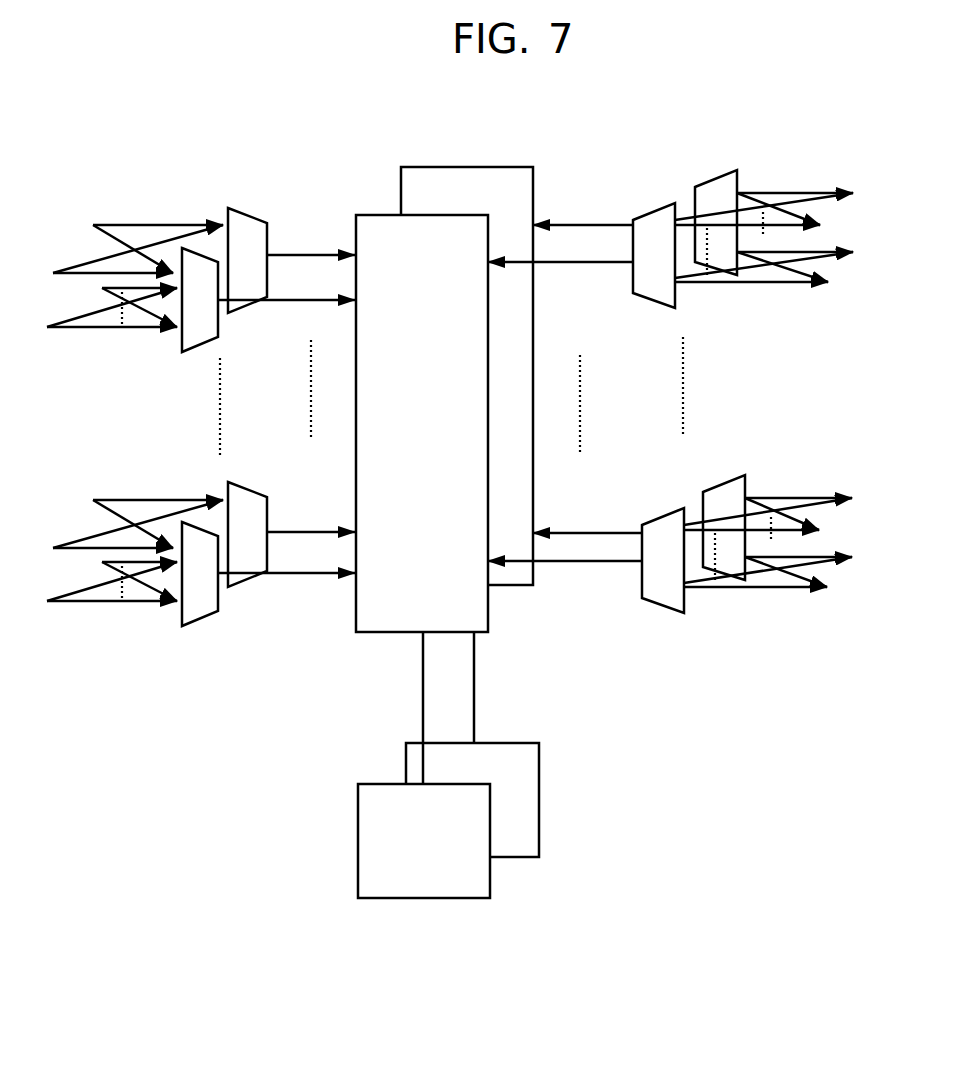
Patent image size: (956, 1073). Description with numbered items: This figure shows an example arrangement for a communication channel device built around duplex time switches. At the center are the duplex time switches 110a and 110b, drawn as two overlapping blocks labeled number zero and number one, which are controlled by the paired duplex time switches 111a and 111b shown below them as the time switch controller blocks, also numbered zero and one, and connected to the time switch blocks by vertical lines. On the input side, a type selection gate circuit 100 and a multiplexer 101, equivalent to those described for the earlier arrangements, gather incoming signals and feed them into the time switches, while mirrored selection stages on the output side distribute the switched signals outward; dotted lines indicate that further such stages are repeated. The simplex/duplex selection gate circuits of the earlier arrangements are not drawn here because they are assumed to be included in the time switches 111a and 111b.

The type selection gate circuit 100 is at (257, 220).
The multiplexer 101 is at (207, 340).
The duplex time switch 110a is at (381, 213).
The duplex time switch 110b is at (434, 166).
The duplex time switch controller 111a is at (423, 899).
The duplex time switch controller 111b is at (503, 858).